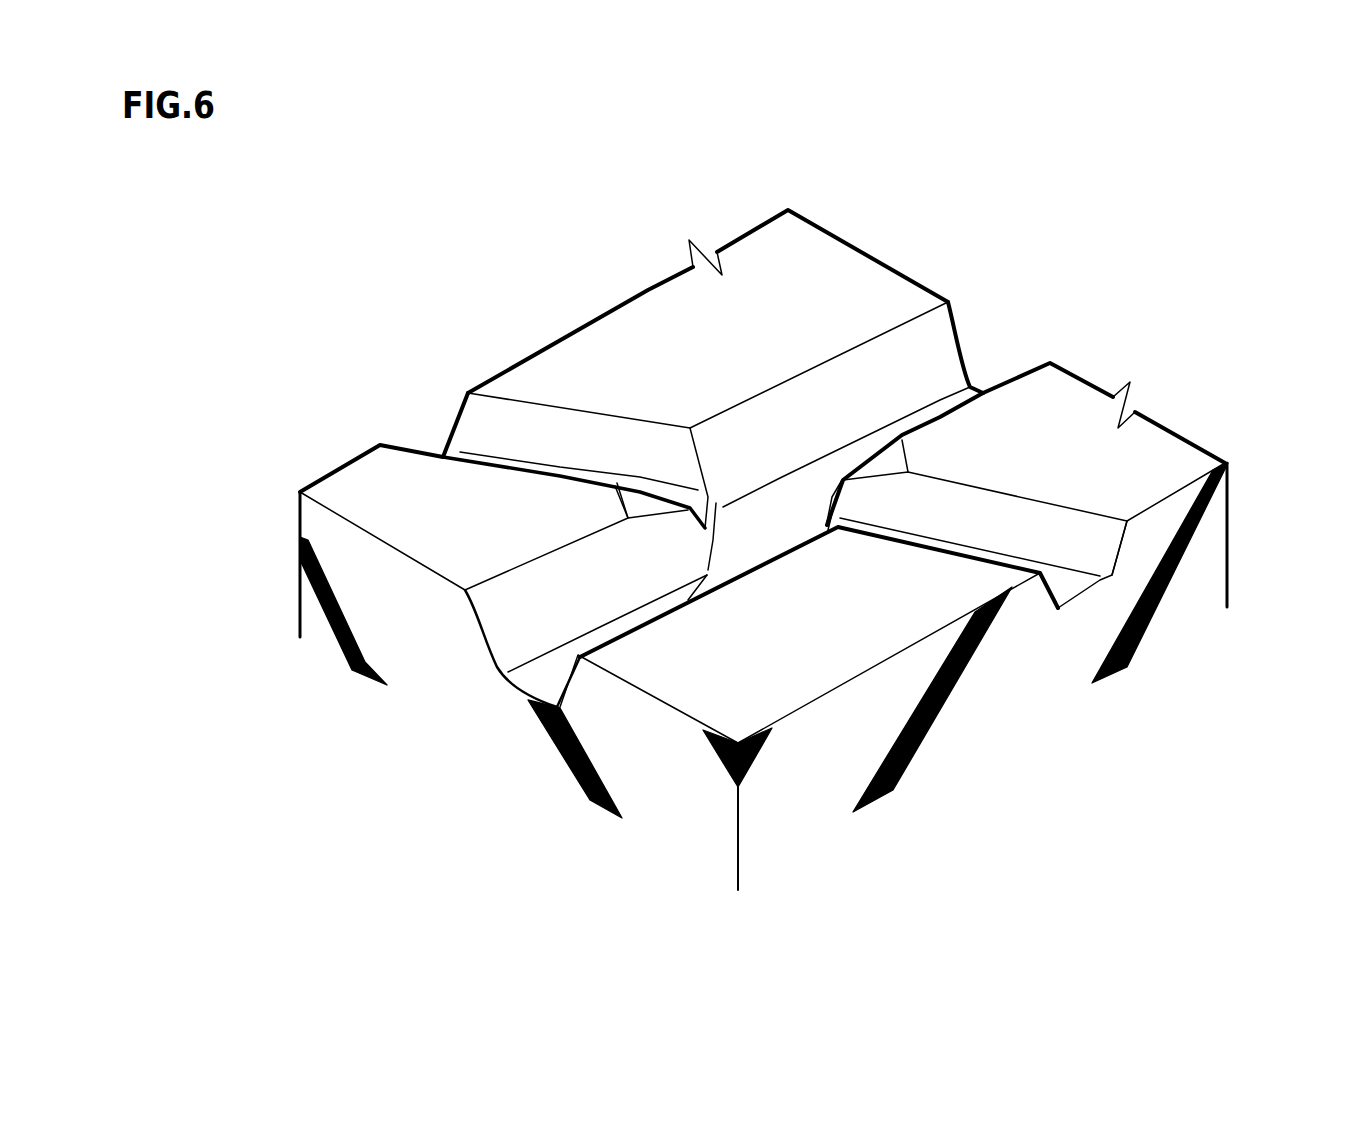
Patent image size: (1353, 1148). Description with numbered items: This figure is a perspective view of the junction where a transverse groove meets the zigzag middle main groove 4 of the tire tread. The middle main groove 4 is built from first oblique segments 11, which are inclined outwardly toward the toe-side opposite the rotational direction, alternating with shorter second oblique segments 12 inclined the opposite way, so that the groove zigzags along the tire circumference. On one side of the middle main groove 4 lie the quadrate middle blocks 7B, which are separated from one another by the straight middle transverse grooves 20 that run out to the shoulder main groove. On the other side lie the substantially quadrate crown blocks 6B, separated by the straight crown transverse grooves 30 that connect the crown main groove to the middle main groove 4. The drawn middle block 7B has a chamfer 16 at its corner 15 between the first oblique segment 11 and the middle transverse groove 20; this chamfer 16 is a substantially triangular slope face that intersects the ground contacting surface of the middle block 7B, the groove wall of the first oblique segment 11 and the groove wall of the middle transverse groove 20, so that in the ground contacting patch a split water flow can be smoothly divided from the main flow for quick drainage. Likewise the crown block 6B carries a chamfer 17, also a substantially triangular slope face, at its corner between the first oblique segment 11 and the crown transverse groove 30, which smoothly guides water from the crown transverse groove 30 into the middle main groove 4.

The middle main groove 4 is at (1002, 333).
The crown block 6B is at (836, 275).
The middle block 7B is at (1050, 427).
The first oblique segment 11 is at (920, 367).
The second oblique segment 12 is at (752, 535).
The corner 15 is at (837, 495).
The chamfer 16 is at (882, 468).
The chamfer 17 is at (655, 507).
The middle transverse groove 20 is at (1078, 540).
The crown transverse groove 30 is at (430, 427).